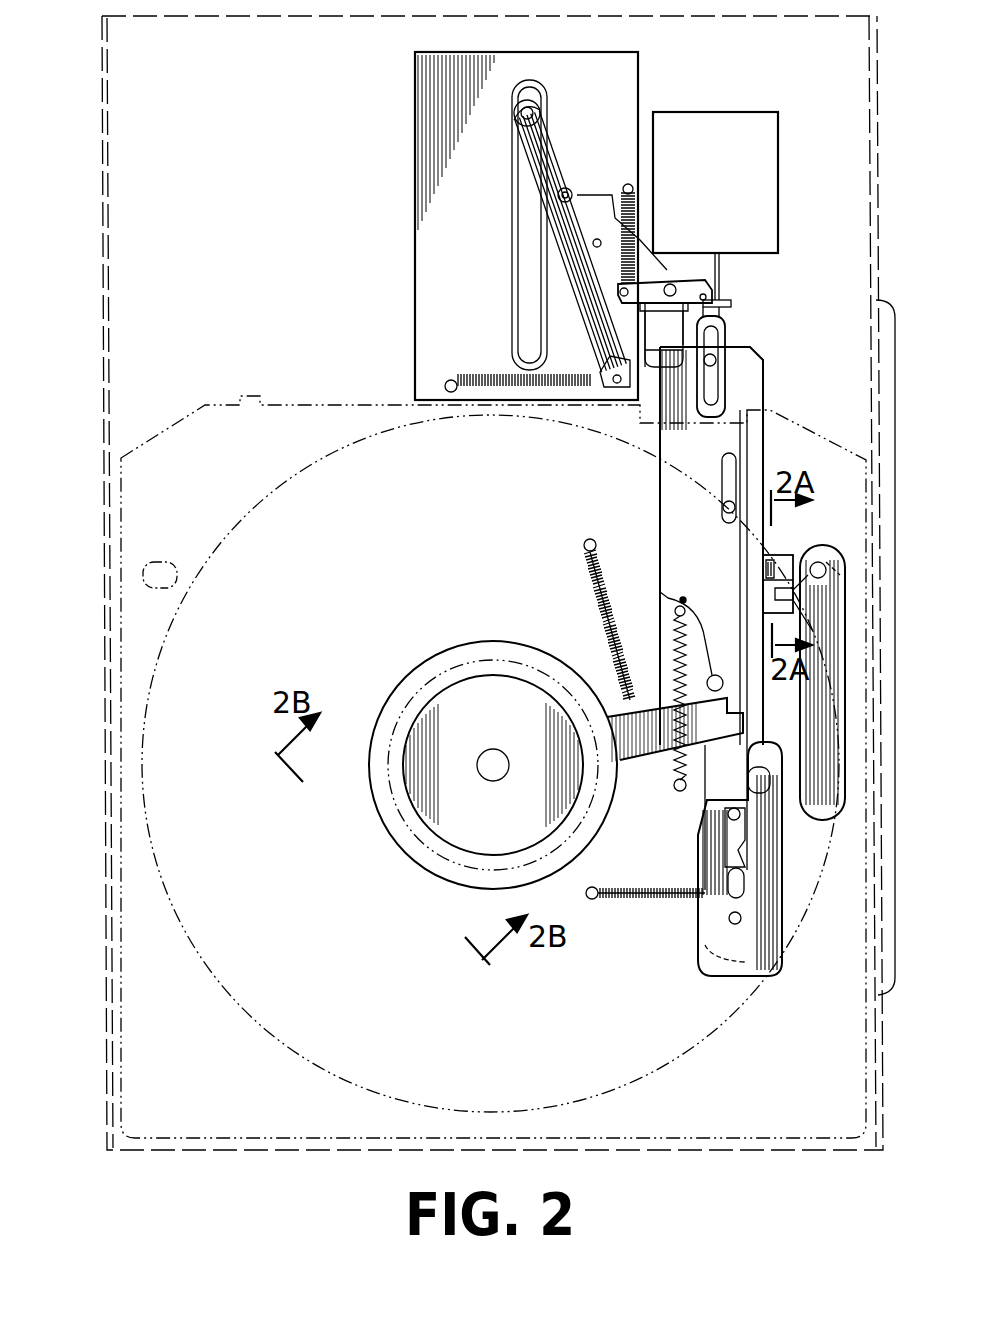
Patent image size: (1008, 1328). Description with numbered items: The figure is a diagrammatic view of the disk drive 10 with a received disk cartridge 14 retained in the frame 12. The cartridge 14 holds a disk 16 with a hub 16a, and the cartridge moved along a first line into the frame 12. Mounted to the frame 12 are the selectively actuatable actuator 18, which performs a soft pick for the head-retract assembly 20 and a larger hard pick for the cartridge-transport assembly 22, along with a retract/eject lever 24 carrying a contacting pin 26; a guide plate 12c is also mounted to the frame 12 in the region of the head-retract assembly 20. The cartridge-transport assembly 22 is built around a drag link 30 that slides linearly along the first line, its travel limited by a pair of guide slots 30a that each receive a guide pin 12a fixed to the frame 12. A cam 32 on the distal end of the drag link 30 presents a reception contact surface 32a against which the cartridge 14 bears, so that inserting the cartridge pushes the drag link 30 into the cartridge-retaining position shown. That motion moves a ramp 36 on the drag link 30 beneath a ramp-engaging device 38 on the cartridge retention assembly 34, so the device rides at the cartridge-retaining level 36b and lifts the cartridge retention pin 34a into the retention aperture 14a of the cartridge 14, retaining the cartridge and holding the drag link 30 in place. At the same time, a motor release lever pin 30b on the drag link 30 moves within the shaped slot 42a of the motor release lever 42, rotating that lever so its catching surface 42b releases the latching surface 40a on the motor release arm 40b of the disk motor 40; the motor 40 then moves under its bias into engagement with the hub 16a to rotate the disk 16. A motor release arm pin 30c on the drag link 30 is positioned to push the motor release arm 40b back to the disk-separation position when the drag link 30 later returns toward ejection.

The disk drive 10 is at (199, 93).
The frame 12 is at (104, 290).
The guide pin 12a is at (735, 500).
The guide plate 12c is at (491, 204).
The disk cartridge 14 is at (205, 405).
The retention aperture 14a is at (832, 575).
The disk 16 is at (242, 522).
The hub 16a is at (411, 846).
The actuator 18 is at (712, 172).
The head-retract assembly 20 is at (416, 172).
The cartridge-transport assembly 22 is at (905, 709).
The retract/eject lever 24 is at (717, 280).
The contacting pin 26 is at (725, 305).
The drag link 30 is at (704, 522).
The guide slot 30a is at (735, 462).
The motor release lever pin 30b is at (733, 820).
The motor release arm pin 30c is at (668, 604).
The cam 32 is at (718, 373).
The reception contact surface 32a is at (718, 427).
The cartridge retention assembly 34 is at (806, 818).
The cartridge retention pin 34a is at (817, 560).
The ramp 36 is at (773, 598).
The cartridge-retaining level 36b is at (767, 583).
The ramp-engaging device 38 is at (796, 598).
The disk motor 40 is at (446, 692).
The latching surface 40a is at (735, 690).
The motor release arm 40b is at (652, 695).
The motor release lever 42 is at (700, 963).
The shaped slot 42a is at (727, 852).
The catching surface 42b is at (757, 768).